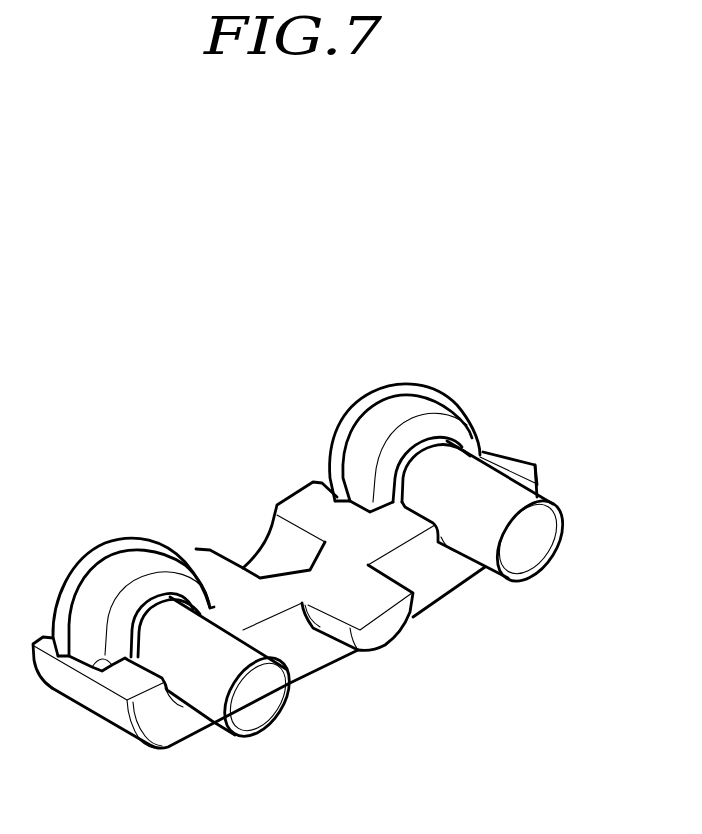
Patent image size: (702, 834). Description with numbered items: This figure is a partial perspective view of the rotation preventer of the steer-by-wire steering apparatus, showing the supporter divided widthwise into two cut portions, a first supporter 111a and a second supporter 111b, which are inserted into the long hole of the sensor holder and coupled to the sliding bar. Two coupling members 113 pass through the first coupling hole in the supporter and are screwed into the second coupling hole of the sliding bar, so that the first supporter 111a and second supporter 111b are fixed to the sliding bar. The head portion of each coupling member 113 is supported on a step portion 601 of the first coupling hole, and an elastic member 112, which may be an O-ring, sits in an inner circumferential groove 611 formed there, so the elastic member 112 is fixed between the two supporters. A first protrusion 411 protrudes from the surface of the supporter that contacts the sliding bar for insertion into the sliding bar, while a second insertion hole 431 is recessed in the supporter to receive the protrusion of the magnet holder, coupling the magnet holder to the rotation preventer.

The first supporter 111a is at (323, 600).
The second supporter 111b is at (536, 475).
The elastic member 112 is at (120, 570).
The coupling member 113 is at (203, 700).
The first protrusion 411 is at (393, 630).
The second insertion hole 431 is at (270, 552).
The step portion 601 is at (94, 668).
The inner circumferential groove 611 is at (56, 662).